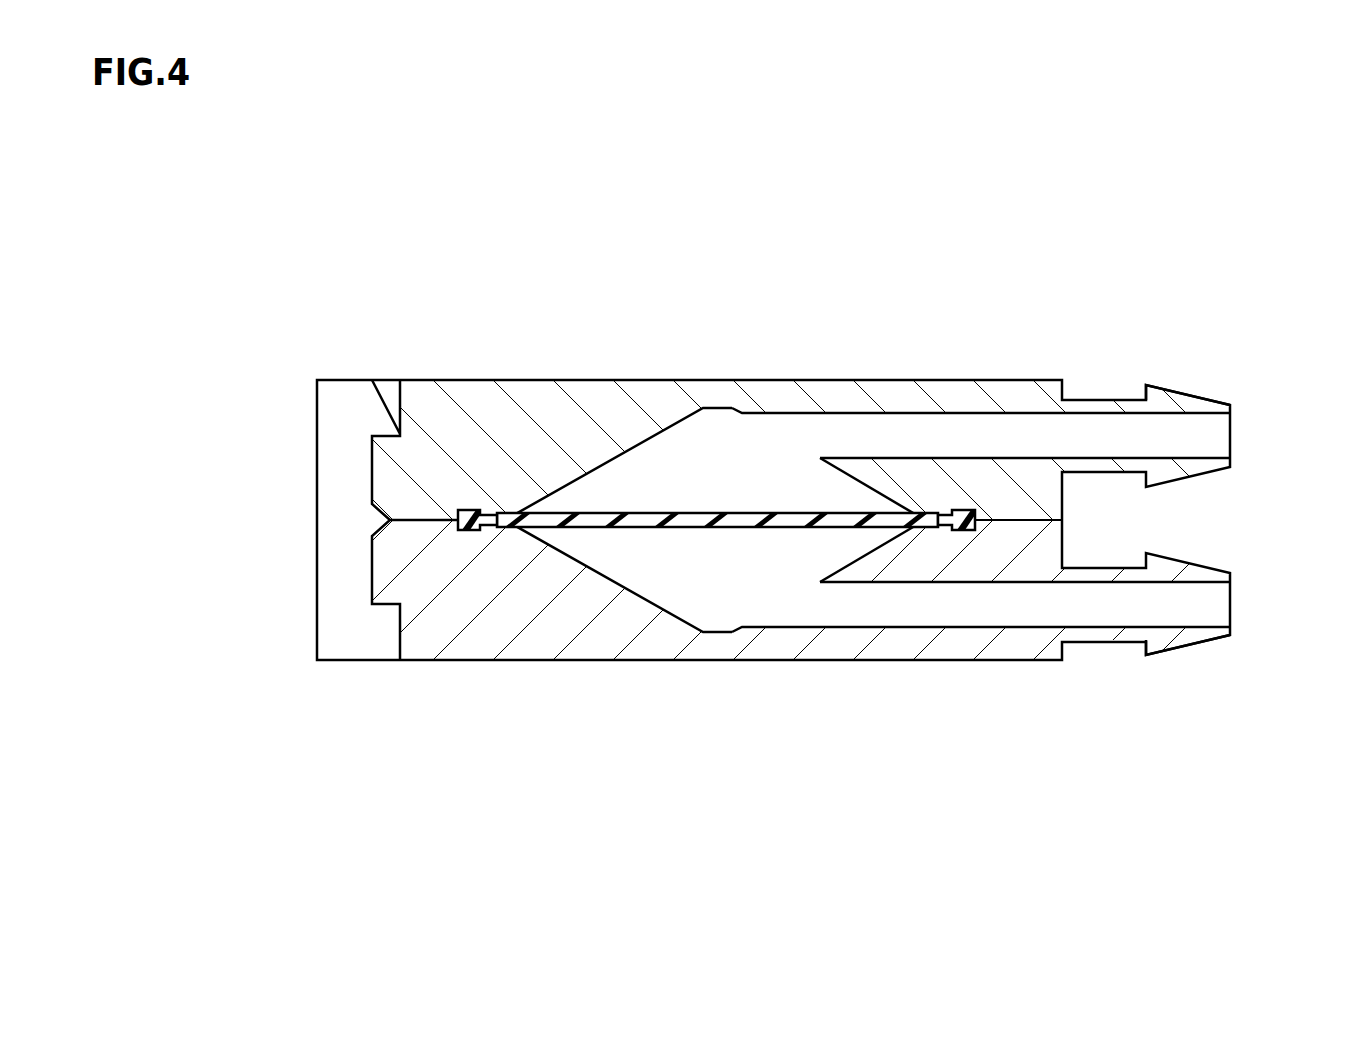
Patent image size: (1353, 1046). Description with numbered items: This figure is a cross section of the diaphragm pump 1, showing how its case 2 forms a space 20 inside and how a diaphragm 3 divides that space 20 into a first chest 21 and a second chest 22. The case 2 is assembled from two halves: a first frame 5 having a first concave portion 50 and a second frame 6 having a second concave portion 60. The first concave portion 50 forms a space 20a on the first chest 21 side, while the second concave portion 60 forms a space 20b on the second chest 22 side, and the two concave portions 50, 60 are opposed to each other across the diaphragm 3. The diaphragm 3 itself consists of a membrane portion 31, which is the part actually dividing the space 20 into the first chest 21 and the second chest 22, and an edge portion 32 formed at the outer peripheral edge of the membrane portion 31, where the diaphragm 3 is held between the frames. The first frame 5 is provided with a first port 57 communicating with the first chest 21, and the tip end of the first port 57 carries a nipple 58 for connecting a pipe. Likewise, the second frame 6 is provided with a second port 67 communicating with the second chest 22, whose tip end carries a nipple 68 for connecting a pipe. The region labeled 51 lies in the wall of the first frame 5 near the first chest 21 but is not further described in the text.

The diaphragm pump 1 is at (1310, 192).
The case 2 is at (240, 382).
The diaphragm 3 is at (716, 670).
The first frame 5 is at (427, 470).
The second frame 6 is at (402, 552).
The space 20 is at (897, 396).
The space on the first chest side 20a is at (775, 435).
The space on the second chest side 20b is at (830, 537).
The first chest 21 is at (660, 459).
The second chest 22 is at (677, 590).
The membrane portion 31 is at (887, 528).
The edge portion 32 is at (476, 530).
The first concave portion 50 is at (745, 455).
The upper body wall 51 is at (545, 400).
The first port 57 is at (1022, 428).
The nipple 58 is at (1182, 402).
The second concave portion 60 is at (763, 577).
The second port 67 is at (1043, 615).
The nipple 68 is at (1192, 637).